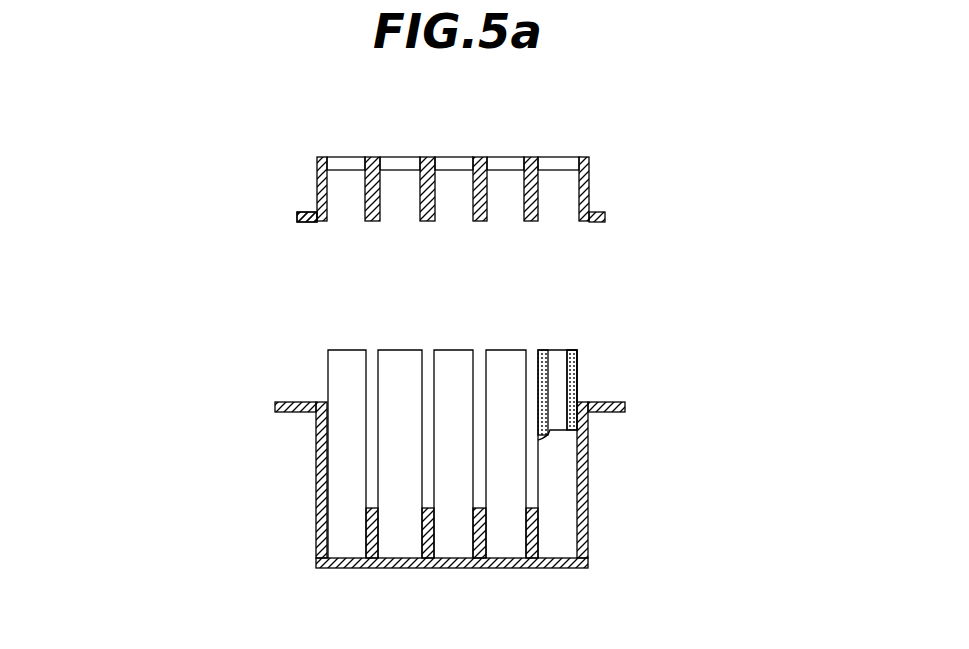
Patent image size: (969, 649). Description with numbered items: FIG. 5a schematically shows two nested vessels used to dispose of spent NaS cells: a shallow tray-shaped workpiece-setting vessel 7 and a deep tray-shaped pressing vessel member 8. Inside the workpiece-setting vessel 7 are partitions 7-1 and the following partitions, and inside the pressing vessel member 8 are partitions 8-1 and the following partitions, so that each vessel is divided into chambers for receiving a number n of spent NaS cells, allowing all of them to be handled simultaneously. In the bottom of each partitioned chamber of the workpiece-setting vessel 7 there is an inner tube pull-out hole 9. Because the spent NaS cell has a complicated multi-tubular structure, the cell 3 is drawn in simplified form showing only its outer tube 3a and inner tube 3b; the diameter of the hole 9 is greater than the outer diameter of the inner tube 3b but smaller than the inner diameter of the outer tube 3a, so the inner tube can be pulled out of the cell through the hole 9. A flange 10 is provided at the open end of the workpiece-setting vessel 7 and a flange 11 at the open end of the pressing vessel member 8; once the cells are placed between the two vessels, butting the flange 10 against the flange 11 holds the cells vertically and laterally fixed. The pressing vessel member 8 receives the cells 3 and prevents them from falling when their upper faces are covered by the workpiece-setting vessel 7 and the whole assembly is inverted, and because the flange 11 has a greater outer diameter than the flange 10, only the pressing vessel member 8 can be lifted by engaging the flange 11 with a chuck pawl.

The spent NaS cell 3 is at (560, 466).
The outer tube 3a is at (580, 366).
The inner tube 3b is at (572, 350).
The workpiece-setting vessel 7 is at (587, 190).
The partition 7-1 is at (366, 203).
The pressing vessel member 8 is at (590, 512).
The partition 8-1 is at (368, 530).
The inner tube pull-out hole 9 is at (496, 163).
The flange 10 is at (306, 221).
The flange 11 is at (290, 402).